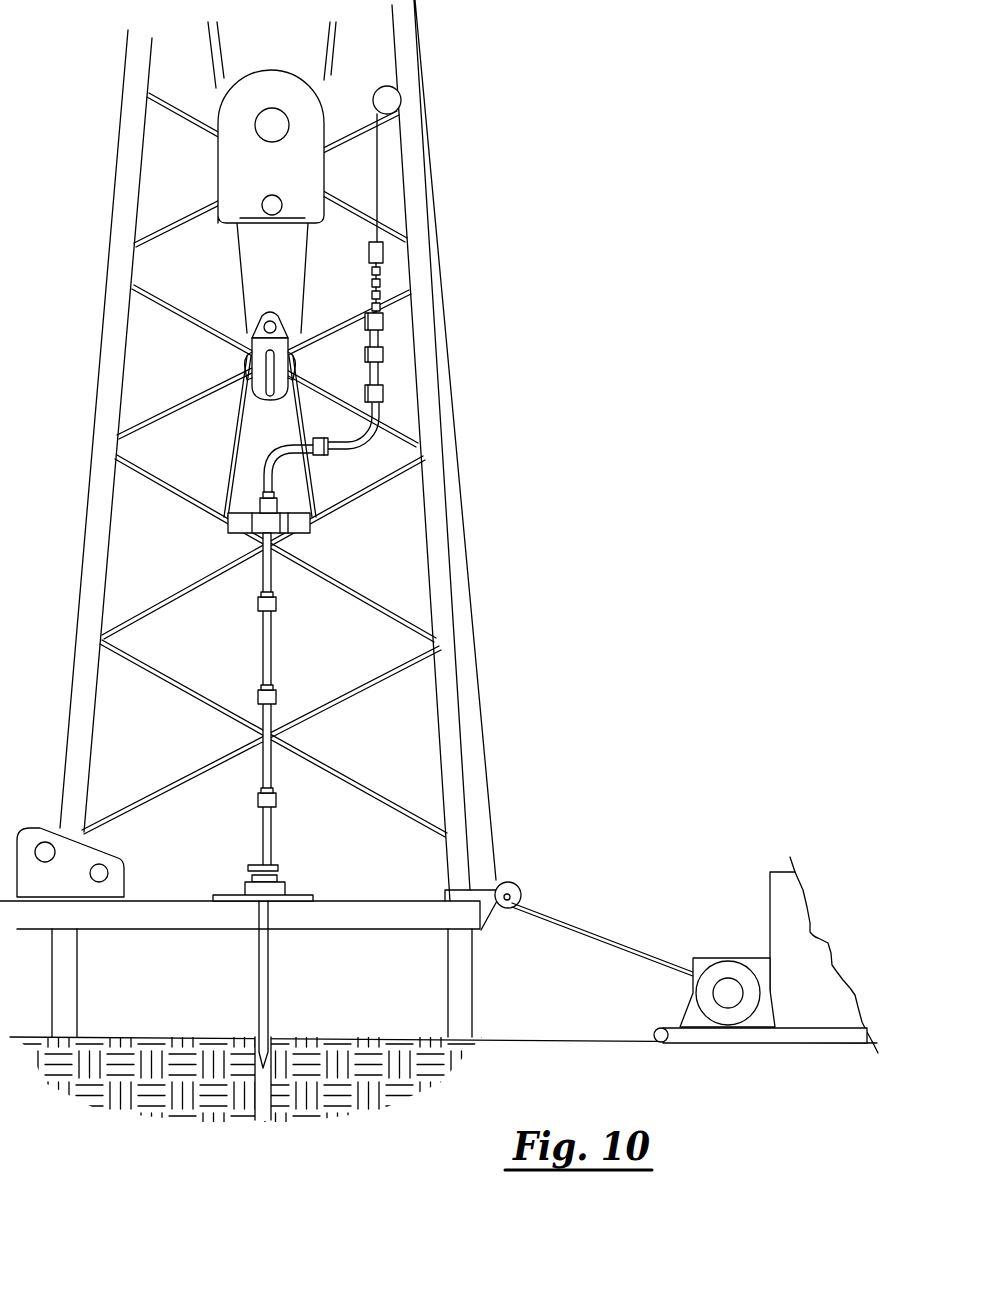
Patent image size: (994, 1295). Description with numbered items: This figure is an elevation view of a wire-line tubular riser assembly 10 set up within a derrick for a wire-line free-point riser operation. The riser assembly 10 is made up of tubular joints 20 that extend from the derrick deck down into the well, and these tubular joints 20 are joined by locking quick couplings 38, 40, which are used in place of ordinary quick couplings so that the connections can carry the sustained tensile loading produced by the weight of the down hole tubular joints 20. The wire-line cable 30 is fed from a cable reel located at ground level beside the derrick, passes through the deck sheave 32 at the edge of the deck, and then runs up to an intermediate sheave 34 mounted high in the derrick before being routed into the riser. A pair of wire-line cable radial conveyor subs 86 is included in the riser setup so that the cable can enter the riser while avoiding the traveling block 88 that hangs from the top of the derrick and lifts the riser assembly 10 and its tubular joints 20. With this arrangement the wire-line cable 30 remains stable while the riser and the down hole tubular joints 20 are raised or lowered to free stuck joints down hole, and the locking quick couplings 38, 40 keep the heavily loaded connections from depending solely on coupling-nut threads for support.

The wire-line riser assembly 10 is at (226, 657).
The tubular joints 20 is at (272, 1005).
The wire-line cable 30 is at (595, 937).
The deck sheave 32 is at (518, 885).
The intermediate sheave 34 is at (393, 96).
The locking quick coupling assembly 38 is at (278, 598).
The locking quick coupling assembly 40 is at (385, 358).
The radial conveyor subs 86 is at (266, 470).
The traveling block 88 is at (230, 143).